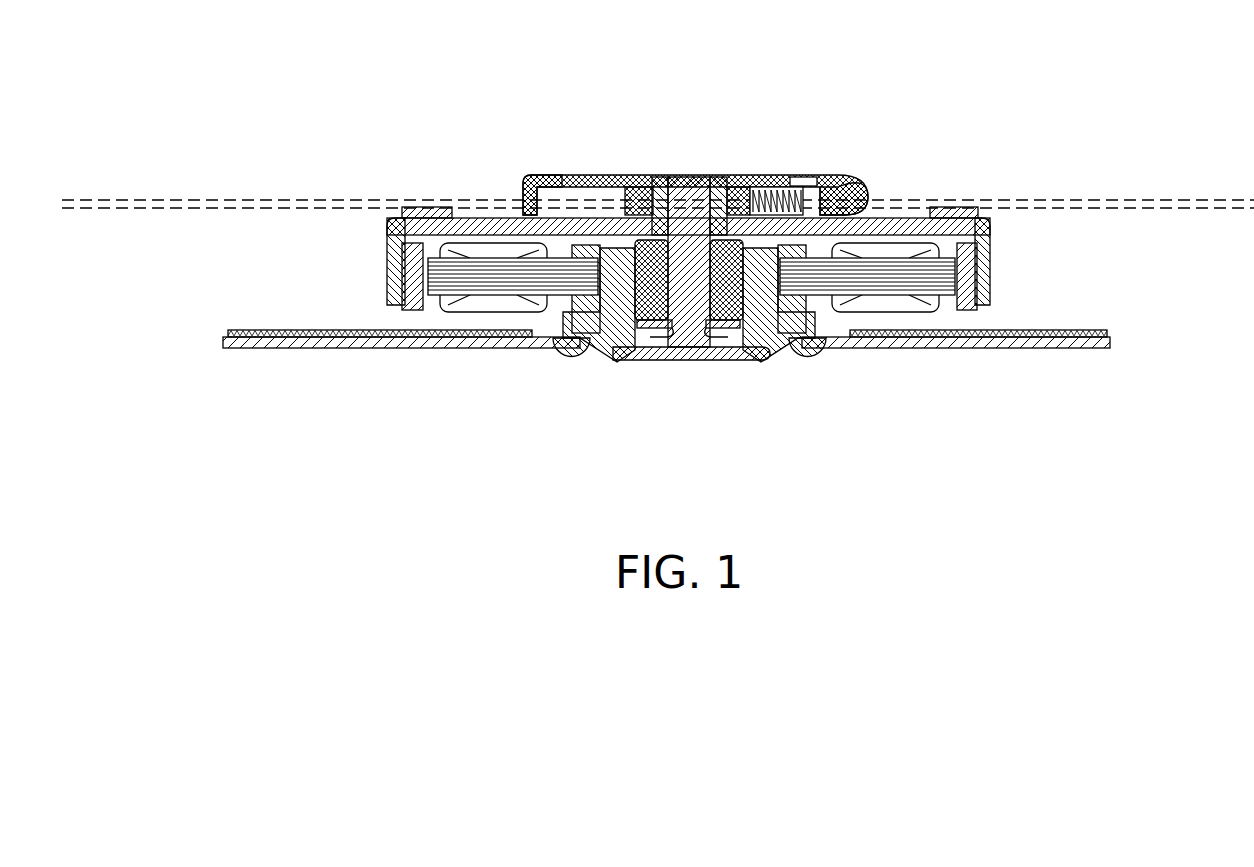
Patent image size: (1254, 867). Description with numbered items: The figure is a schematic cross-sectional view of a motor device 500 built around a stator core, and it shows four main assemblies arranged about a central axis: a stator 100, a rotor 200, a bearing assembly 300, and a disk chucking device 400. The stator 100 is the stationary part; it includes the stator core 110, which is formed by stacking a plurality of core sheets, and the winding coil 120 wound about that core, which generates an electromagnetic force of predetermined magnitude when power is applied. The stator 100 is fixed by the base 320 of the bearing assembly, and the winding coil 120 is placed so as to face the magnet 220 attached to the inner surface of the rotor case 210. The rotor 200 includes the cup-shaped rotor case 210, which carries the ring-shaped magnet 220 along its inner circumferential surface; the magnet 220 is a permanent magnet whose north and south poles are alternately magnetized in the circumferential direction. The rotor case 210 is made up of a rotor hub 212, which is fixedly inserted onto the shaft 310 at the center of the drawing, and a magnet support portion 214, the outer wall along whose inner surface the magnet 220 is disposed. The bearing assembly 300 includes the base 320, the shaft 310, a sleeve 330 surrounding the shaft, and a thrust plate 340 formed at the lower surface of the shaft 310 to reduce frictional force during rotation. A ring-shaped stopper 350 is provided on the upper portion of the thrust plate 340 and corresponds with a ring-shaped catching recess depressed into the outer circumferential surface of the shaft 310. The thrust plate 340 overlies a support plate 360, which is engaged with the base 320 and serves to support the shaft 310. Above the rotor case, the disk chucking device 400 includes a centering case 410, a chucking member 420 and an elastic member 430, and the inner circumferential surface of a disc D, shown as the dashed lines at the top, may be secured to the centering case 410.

The motor device 500 is at (858, 34).
The disc D is at (230, 205).
The stator 100 is at (666, 361).
The stator core 110 is at (455, 278).
The winding coil 120 is at (490, 305).
The rotor 200 is at (761, 216).
The rotor case 210 is at (897, 218).
The rotor hub 212 is at (660, 177).
The magnet support portion 214 is at (992, 263).
The magnet 220 is at (992, 290).
The bearing assembly 300 is at (666, 336).
The shaft 310 is at (670, 308).
The base 320 is at (587, 357).
The sleeve 330 is at (690, 330).
The thrust plate 340 is at (720, 362).
The ring-shaped stopper 350 is at (773, 362).
The support plate 360 is at (637, 360).
The disk chucking device 400 is at (695, 152).
The centering case 410 is at (537, 177).
The chucking member 420 is at (853, 177).
The elastic member 430 is at (763, 180).